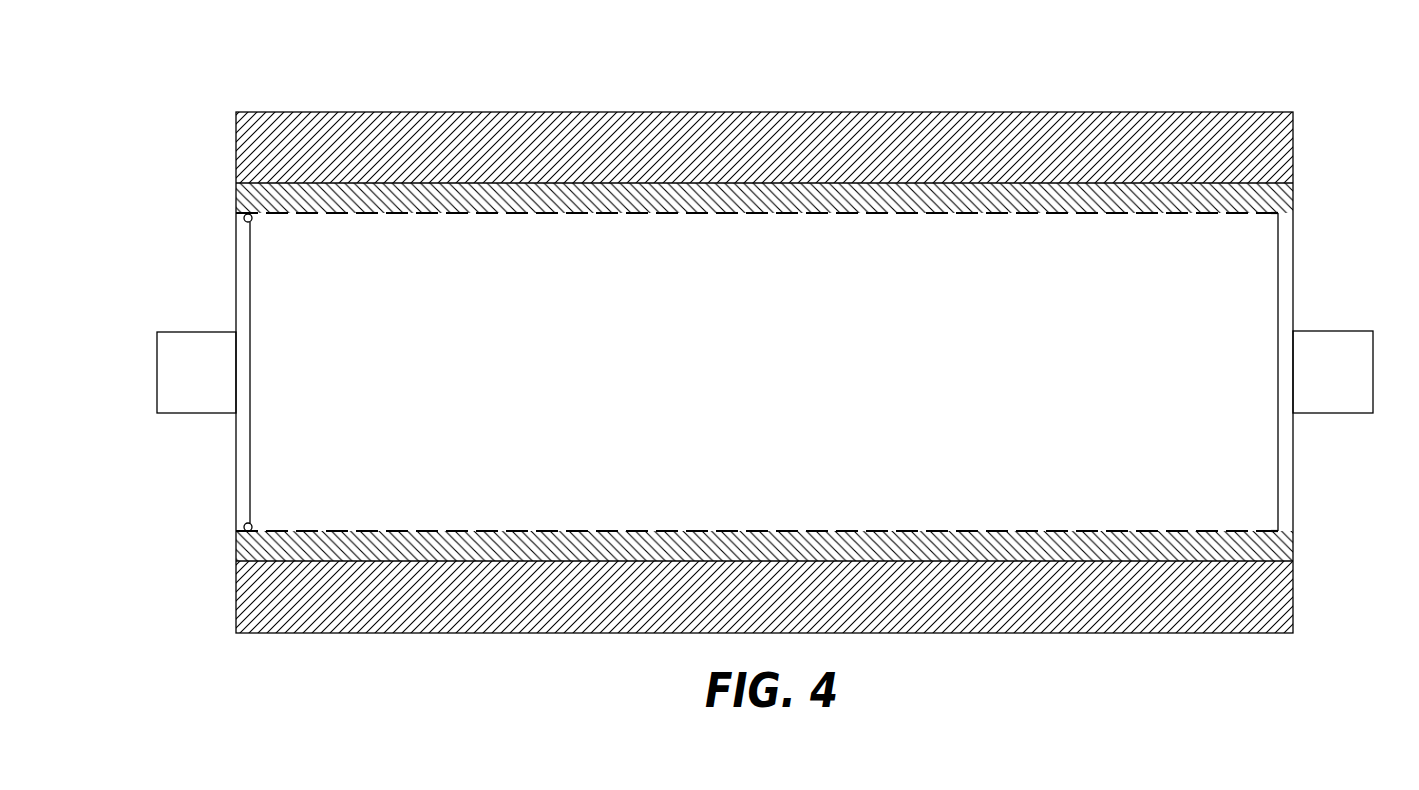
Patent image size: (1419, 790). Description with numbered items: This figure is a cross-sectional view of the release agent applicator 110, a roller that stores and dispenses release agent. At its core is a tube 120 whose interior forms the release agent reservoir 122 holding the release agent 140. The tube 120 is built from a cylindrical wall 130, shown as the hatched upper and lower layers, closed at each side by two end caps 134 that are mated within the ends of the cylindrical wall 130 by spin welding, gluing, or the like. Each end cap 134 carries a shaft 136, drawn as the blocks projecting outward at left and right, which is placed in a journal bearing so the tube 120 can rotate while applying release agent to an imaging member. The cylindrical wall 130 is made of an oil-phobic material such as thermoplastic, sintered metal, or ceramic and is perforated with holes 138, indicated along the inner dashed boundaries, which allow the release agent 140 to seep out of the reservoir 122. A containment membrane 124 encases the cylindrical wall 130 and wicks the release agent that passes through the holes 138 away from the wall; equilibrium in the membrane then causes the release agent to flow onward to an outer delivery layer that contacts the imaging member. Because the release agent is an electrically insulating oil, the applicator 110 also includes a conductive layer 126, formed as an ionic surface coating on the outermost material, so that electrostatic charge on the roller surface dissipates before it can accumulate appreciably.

The release agent applicator 110 is at (1315, 153).
The tube 120 is at (244, 219).
The release agent reservoir 122 is at (777, 390).
The containment membrane 124 is at (236, 543).
The conductive layer 126 is at (328, 112).
The cylindrical wall 130 is at (672, 213).
The end caps 134 is at (236, 292).
The shafts 136 is at (196, 413).
The holes 138 is at (540, 213).
The release agent 140 is at (1250, 479).